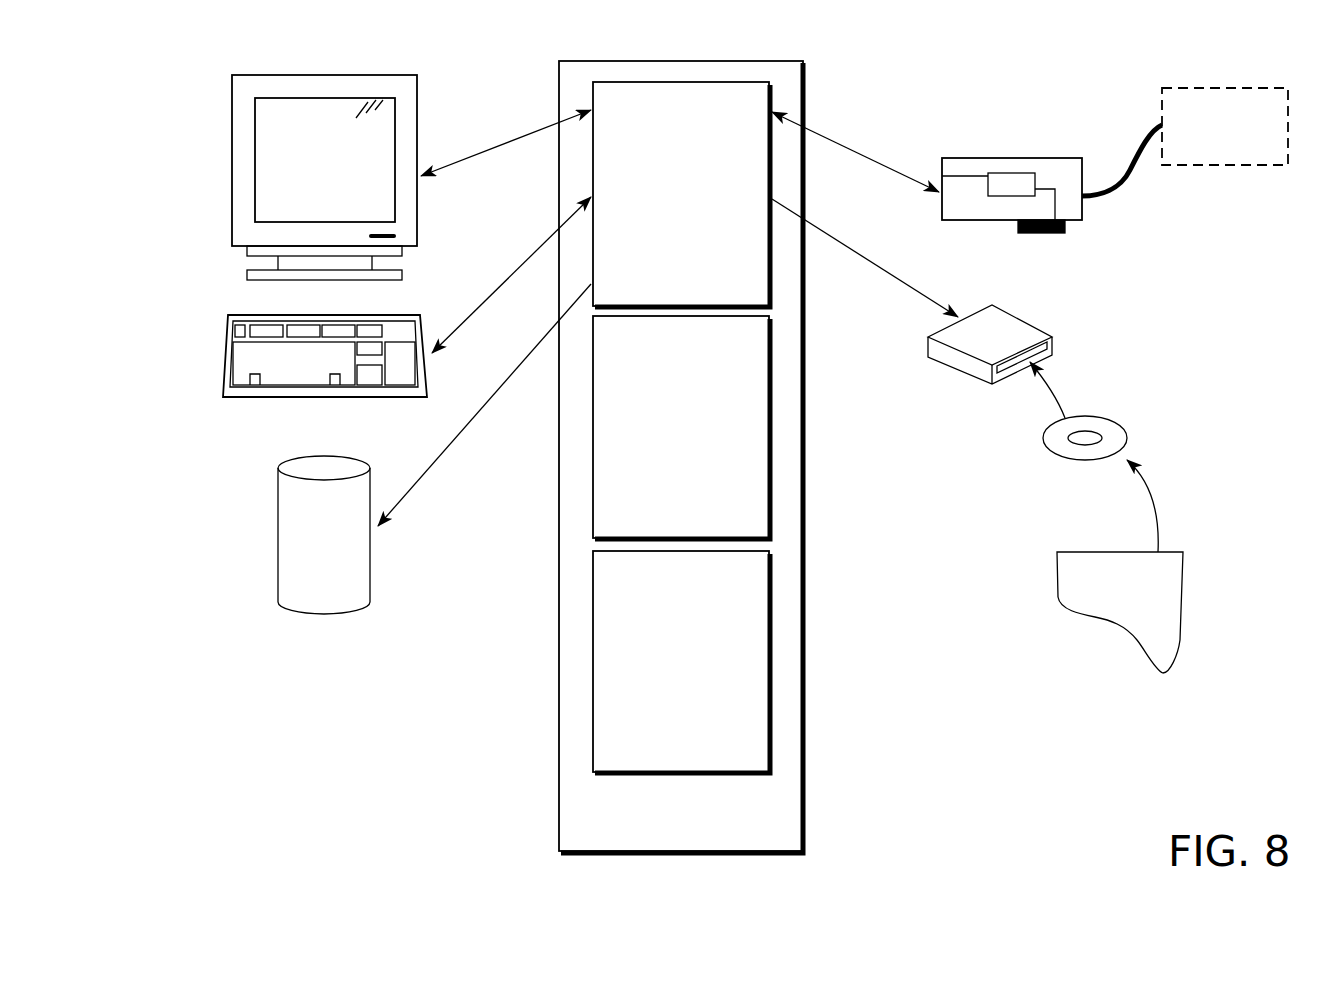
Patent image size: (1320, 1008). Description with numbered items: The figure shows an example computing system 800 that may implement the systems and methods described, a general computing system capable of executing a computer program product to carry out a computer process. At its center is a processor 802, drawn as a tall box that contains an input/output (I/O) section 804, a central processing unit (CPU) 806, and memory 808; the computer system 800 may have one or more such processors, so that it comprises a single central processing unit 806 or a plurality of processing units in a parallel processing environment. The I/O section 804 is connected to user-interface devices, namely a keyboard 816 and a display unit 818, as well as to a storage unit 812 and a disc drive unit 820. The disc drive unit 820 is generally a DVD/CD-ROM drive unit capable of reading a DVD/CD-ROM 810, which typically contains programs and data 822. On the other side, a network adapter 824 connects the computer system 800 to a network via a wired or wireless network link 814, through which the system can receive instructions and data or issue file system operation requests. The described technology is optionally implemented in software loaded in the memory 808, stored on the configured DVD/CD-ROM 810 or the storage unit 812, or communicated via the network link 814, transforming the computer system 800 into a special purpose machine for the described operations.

The computing system 800 is at (432, 752).
The processor 802 is at (681, 457).
The input/output (I/O) section 804 is at (681, 194).
The central processing unit (CPU) 806 is at (681, 427).
The memory 808 is at (681, 662).
The DVD/CD-ROM 810 is at (1125, 418).
The storage unit 812 is at (276, 533).
The network link 814 is at (1110, 195).
The keyboard 816 is at (222, 355).
The display unit 818 is at (230, 179).
The disc drive unit 820 is at (1012, 317).
The programs and data 822 is at (1057, 565).
The network adapter 824 is at (982, 158).